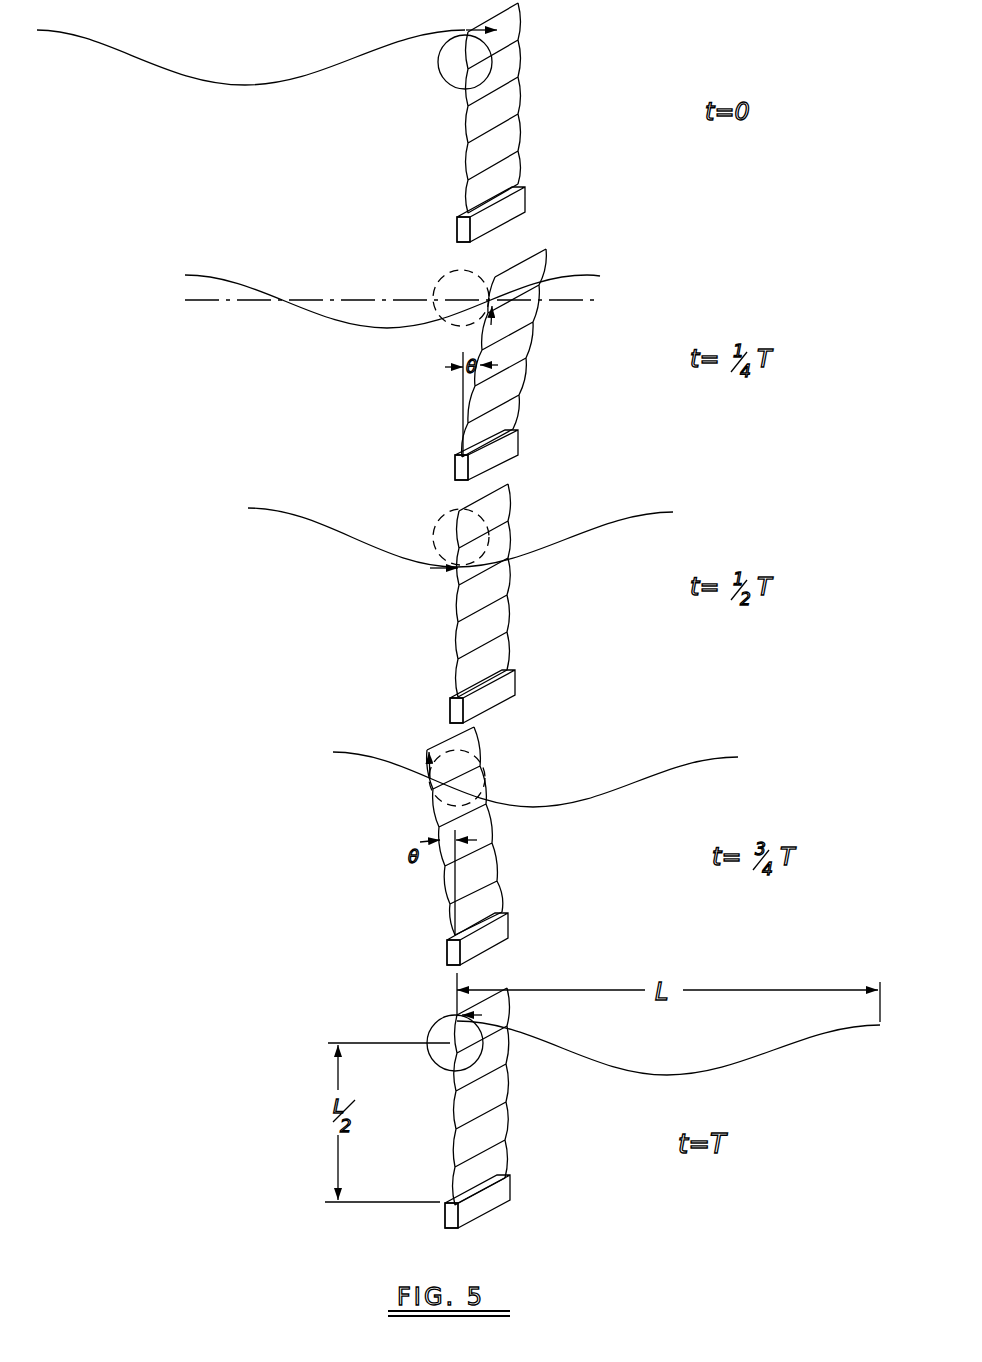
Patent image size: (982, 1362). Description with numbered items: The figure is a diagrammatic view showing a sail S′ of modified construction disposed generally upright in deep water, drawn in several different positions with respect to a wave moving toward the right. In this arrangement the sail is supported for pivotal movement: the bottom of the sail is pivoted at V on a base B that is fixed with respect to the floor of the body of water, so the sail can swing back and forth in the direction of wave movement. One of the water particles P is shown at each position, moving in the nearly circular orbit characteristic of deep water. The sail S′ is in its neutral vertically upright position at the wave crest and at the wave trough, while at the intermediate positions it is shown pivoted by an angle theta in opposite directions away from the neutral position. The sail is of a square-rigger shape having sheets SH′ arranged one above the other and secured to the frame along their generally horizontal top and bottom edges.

The sail S' is at (513, 633).
The sheets SH' is at (525, 108).
The pivot V is at (507, 195).
The base B is at (462, 230).
The water particle P is at (466, 30).